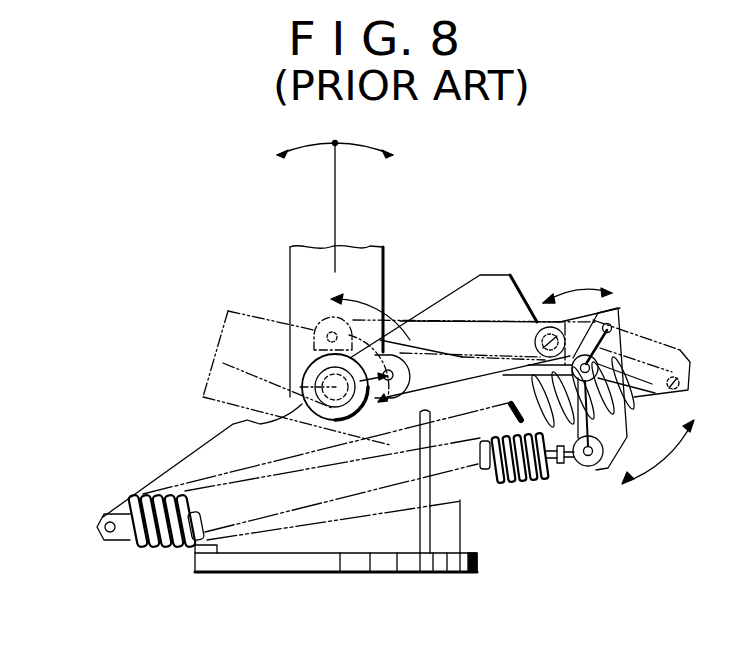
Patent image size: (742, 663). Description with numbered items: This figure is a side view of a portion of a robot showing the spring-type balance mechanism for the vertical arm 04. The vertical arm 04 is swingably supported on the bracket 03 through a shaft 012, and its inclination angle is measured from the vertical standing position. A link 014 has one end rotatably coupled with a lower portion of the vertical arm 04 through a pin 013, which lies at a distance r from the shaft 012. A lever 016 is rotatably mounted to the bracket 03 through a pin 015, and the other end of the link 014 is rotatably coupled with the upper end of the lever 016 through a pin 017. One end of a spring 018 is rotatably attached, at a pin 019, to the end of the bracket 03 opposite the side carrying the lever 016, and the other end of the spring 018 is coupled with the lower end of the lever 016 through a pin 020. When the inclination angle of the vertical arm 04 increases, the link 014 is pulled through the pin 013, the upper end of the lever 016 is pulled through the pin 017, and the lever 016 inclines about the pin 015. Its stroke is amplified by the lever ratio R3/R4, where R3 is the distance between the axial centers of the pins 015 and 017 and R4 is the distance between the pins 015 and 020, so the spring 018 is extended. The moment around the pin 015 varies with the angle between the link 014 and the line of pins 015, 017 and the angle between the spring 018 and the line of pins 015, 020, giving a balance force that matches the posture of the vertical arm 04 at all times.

The bracket 03 is at (493, 283).
The vertical arm 04 is at (290, 278).
The shaft 012 is at (223, 362).
The pin 013 is at (395, 378).
The link 014 is at (453, 343).
The pin 015 is at (680, 382).
The lever 016 is at (676, 356).
The pin 017 is at (611, 326).
The spring 018 is at (157, 496).
The anchor pin 019 is at (107, 520).
The pin 020 is at (590, 466).
The distance between axial centers of pins 015 and 017 R3 is at (615, 363).
The distance between axial centers of pins 015 and 020 R4 is at (578, 456).
The distance from the shaft to the pin 013 r is at (349, 386).